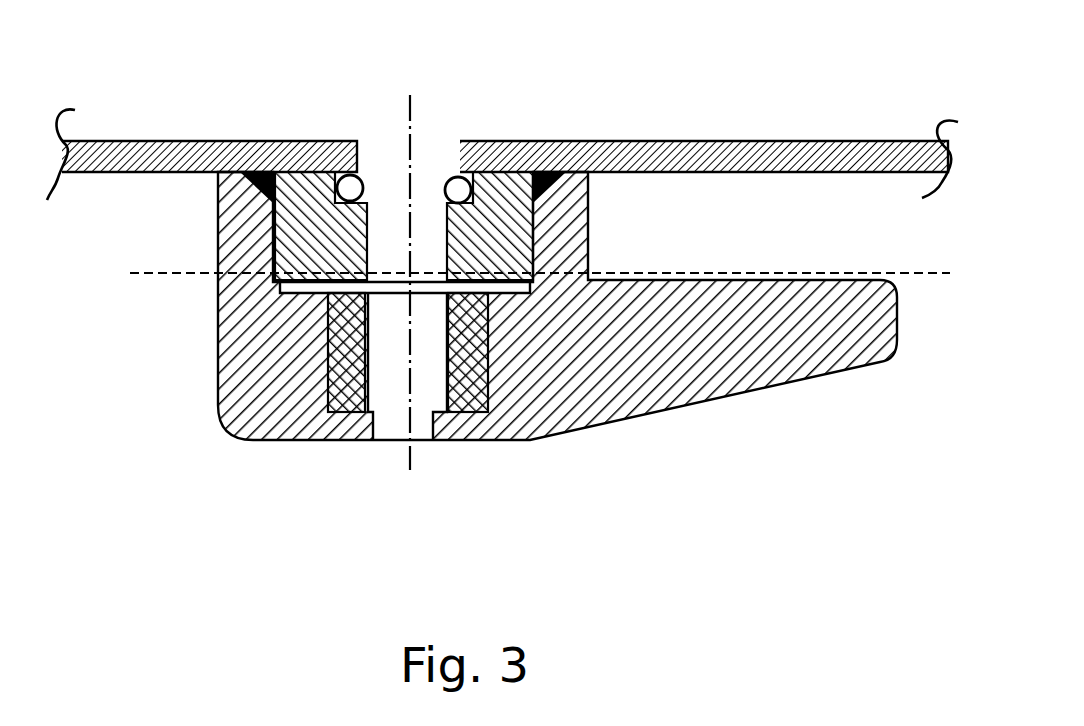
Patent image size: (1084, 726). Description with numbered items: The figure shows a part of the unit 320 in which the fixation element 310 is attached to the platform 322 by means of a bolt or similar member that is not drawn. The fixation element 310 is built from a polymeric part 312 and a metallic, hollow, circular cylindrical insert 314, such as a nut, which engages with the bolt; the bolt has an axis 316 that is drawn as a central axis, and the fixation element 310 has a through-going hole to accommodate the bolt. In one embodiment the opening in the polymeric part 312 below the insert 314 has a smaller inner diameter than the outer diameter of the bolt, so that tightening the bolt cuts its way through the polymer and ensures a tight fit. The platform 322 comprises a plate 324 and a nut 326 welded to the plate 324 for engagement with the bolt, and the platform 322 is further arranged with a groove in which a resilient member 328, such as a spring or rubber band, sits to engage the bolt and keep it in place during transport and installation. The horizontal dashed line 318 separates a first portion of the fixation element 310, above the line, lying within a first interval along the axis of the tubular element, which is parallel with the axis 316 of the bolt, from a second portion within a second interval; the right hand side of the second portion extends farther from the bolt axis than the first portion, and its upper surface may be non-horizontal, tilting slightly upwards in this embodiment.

The fixation element 310 is at (343, 458).
The polymeric part 312 is at (262, 385).
The metallic, hollow, circular cylindrical insert 314 is at (470, 385).
The axis 316 is at (413, 113).
The horizontal dashed line 318 is at (173, 277).
The unit 320 is at (783, 555).
The platform 322 is at (260, 117).
The plate 324 is at (655, 143).
The nut 326 is at (502, 195).
The resilient member 328 is at (346, 176).